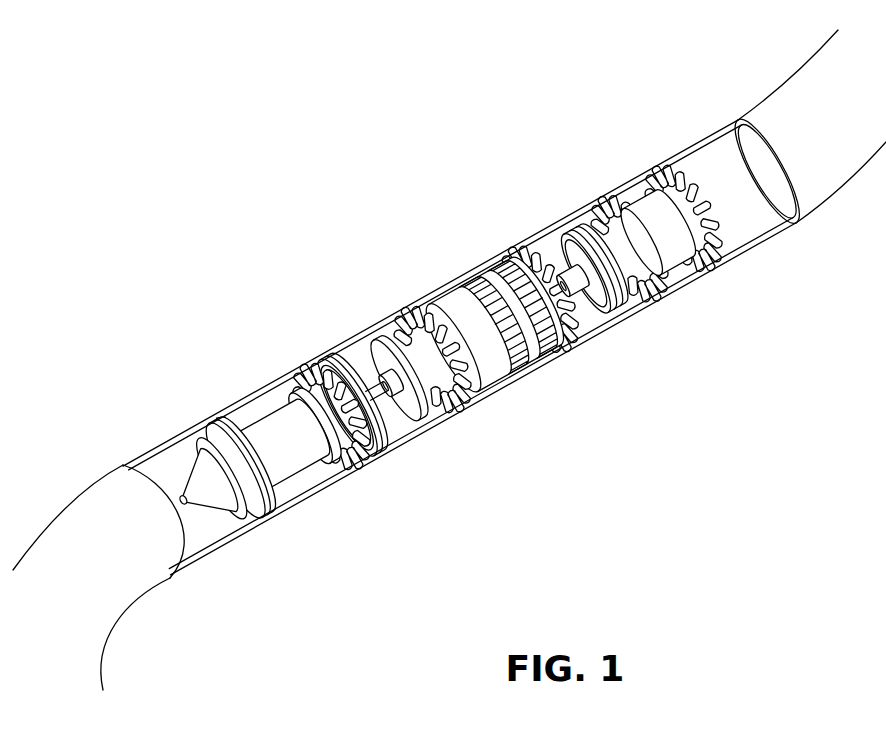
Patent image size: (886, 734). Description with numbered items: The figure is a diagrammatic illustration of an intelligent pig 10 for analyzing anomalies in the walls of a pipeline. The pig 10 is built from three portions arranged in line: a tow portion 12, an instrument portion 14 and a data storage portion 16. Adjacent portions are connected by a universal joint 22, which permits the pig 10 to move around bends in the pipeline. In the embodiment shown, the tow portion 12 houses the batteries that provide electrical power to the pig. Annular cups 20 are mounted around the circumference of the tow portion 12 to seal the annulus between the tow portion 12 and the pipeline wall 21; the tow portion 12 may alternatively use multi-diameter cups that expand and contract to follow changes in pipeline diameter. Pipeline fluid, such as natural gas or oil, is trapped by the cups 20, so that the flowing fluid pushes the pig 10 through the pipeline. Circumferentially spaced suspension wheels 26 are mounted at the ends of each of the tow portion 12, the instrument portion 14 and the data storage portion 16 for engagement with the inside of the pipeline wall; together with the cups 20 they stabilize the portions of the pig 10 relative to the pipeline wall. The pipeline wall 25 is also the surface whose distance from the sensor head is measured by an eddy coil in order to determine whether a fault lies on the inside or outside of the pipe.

The intelligent pig 10 is at (449, 360).
The tow portion 12 is at (281, 425).
The instrument portion 14 is at (587, 337).
The data storage portion 16 is at (643, 218).
The annular cups 20 is at (200, 438).
The pipeline wall 21 is at (143, 563).
The universal joint 22 is at (533, 253).
The pipeline wall 25 is at (353, 332).
The suspension wheels 26 is at (657, 293).